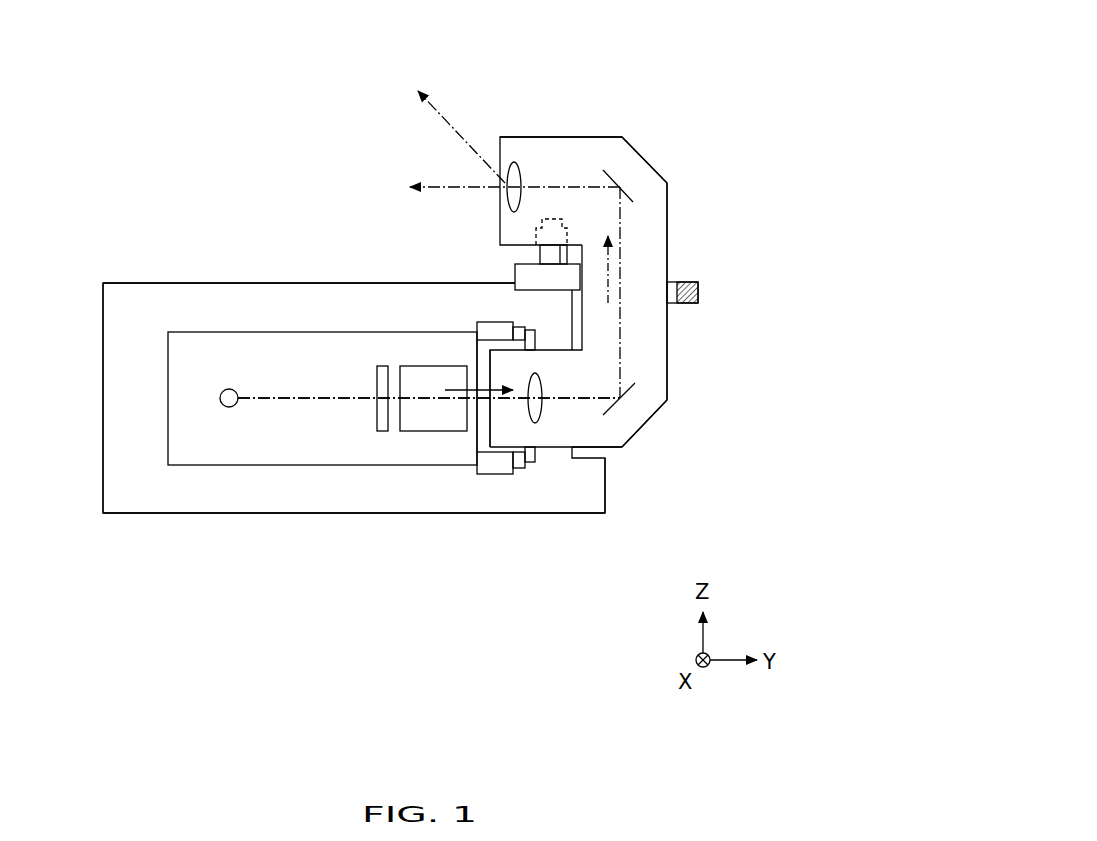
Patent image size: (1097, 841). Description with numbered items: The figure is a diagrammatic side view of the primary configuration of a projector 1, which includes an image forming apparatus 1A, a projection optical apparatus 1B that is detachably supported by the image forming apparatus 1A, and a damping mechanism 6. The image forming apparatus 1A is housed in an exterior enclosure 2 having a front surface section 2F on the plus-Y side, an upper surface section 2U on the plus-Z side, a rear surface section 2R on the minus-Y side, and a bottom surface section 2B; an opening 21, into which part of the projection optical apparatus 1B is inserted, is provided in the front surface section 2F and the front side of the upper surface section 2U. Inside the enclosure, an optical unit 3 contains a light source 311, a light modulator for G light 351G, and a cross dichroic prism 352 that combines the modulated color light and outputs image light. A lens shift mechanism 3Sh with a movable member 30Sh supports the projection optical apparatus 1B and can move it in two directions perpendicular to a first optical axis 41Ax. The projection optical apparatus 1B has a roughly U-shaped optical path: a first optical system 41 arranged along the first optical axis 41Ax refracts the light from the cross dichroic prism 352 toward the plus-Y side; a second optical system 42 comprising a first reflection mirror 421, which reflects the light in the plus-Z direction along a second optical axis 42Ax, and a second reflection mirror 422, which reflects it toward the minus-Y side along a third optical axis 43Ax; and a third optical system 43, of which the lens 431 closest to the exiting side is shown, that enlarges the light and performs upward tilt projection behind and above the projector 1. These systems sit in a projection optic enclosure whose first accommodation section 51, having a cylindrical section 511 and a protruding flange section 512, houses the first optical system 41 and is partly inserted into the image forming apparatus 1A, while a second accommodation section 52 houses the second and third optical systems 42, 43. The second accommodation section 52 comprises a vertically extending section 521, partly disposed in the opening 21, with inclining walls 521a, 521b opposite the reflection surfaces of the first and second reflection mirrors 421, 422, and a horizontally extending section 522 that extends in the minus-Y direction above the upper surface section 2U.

The projector 1 is at (722, 70).
The image forming apparatus 1A is at (144, 252).
The projection optical apparatus 1B is at (657, 152).
The exterior enclosure 2 is at (102, 328).
The upper surface section 2U is at (222, 283).
The rear surface section 2R is at (102, 435).
The bottom surface section 2B is at (268, 513).
The front surface section 2F is at (620, 491).
The opening 21 is at (622, 456).
The optical unit 3 is at (200, 332).
The lens shift mechanism 3Sh is at (466, 477).
The movable member 30Sh is at (520, 470).
The light source 311 is at (229, 389).
The light modulator for G light 351G is at (376, 382).
The cross dichroic prism 352 is at (415, 432).
The first optical system 41 is at (555, 425).
The first optical axis 41Ax is at (610, 418).
The second optical system 42 is at (648, 346).
The second optical axis 42Ax is at (625, 268).
The first reflection mirror 421 is at (637, 385).
The second reflection mirror 422 is at (635, 195).
The third optical system 43 is at (596, 165).
The third optical axis 43Ax is at (575, 185).
The lens 431 is at (508, 165).
The first accommodation section 51 is at (559, 435).
The cylindrical section 511 is at (543, 455).
The flange section 512 is at (532, 460).
The second accommodation section 52 is at (667, 242).
The vertically extending section 521 is at (657, 318).
The inclining wall 521a is at (648, 420).
The inclining wall 521b is at (657, 170).
The horizontally extending section 522 is at (555, 137).
The damping mechanism 6 is at (508, 260).